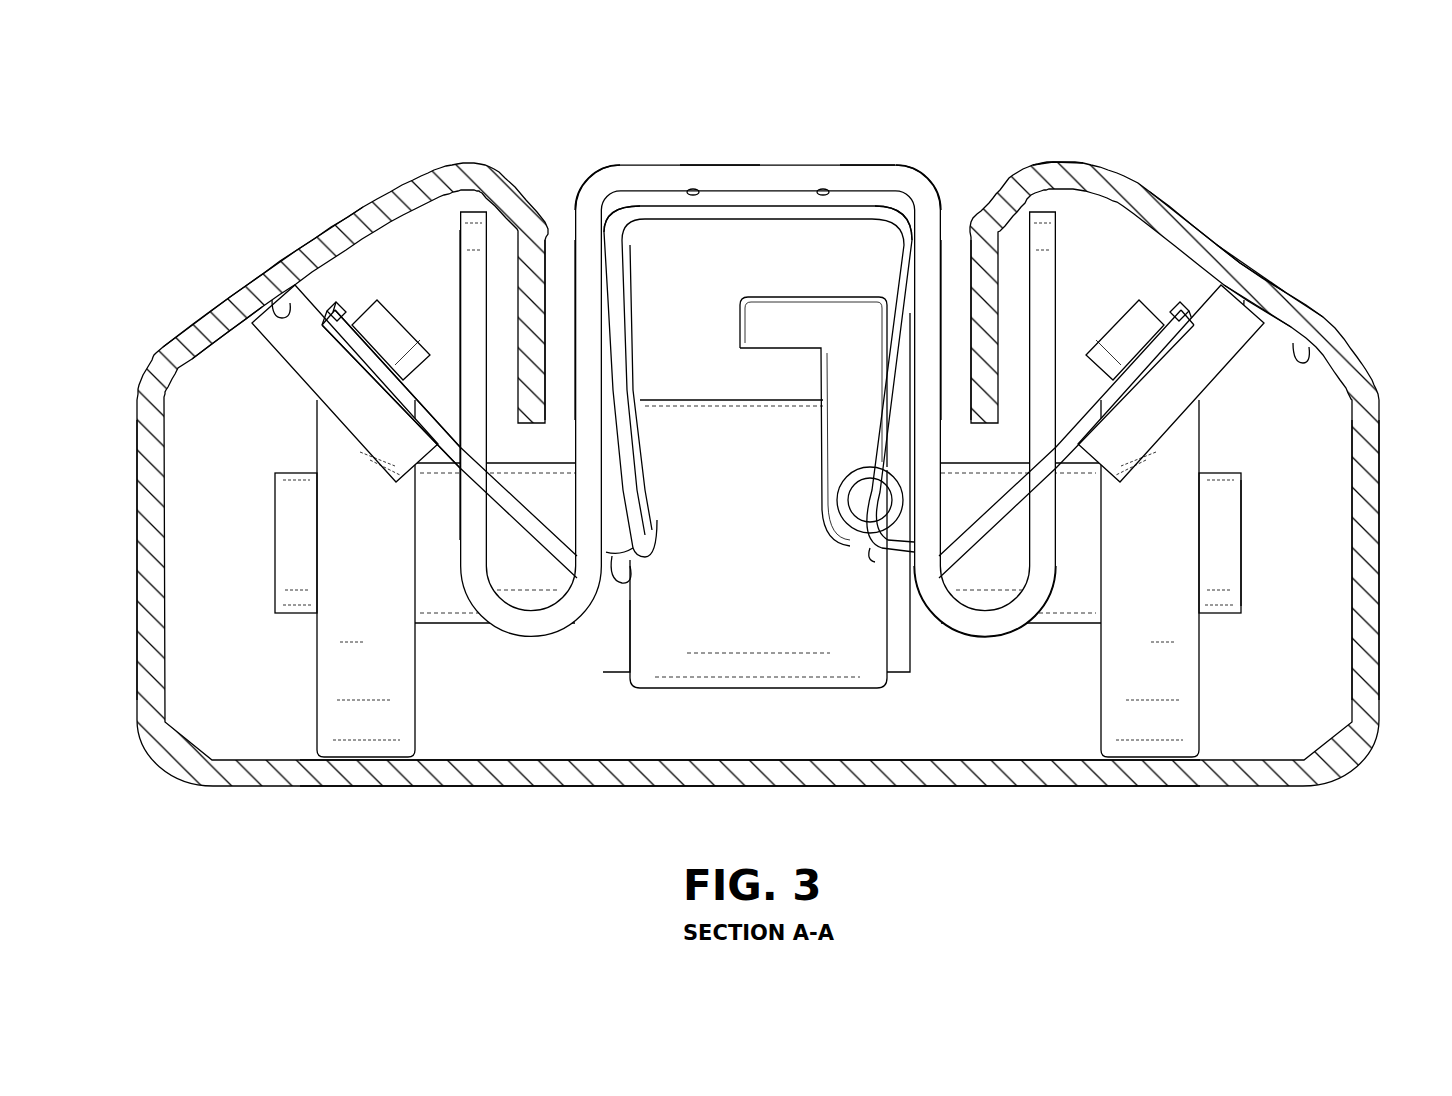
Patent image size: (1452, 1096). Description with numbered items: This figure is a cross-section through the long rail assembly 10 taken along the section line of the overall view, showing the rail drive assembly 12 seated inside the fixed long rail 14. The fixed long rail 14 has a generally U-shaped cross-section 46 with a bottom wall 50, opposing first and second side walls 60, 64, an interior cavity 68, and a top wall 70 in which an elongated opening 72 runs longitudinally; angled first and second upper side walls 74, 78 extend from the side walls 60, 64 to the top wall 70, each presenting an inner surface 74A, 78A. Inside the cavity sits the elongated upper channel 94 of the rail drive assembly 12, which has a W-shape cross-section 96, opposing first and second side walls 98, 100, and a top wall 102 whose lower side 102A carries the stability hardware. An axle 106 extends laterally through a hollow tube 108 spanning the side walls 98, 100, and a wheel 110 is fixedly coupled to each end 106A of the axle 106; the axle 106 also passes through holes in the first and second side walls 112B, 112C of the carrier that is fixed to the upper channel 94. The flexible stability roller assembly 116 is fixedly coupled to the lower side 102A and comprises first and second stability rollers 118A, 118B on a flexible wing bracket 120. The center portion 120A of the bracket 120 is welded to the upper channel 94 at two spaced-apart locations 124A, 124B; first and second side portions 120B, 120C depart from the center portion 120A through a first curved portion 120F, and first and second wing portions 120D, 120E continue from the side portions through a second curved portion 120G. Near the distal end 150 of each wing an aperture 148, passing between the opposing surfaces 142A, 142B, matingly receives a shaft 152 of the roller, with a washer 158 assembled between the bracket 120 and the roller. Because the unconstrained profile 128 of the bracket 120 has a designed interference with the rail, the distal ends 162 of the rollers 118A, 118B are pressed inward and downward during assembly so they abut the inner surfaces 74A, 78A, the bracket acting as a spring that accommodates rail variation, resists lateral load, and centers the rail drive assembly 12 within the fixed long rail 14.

The latch assembly 10 is at (1307, 215).
The rail drive assembly 12 is at (702, 92).
The fixed long rail 14 is at (1351, 776).
The U-shaped cross-section 46 is at (1363, 667).
The bottom wall 50 is at (875, 777).
The first side wall 60 is at (150, 598).
The second side wall 64 is at (1366, 598).
The interior cavity 68 is at (544, 727).
The top wall 70 is at (1057, 172).
The elongated opening 72 is at (931, 150).
The first upper side wall 74 is at (190, 338).
The inner surface 74A is at (173, 353).
The second upper side wall 78 is at (1297, 323).
The inner surface 78A is at (1297, 357).
The upper channel 94 is at (582, 175).
The W-shape cross-section 96 is at (985, 627).
The first side wall 98 is at (587, 267).
The second side wall 100 is at (935, 272).
The top wall 102 is at (657, 173).
The lower side 102A is at (867, 187).
The axle 106 is at (1246, 553).
The end 106A is at (1240, 583).
The hollow tube 108 is at (1060, 632).
The wheel 110 is at (313, 718).
The first side wall 112B is at (615, 663).
The second side wall 112C is at (898, 660).
The flexible stability roller assembly 116 is at (657, 562).
The first stability roller 118A is at (1210, 353).
The second stability roller 118B is at (300, 340).
The flexible wing bracket 120 is at (436, 456).
The center portion 120A is at (772, 177).
The first side portion 120B is at (627, 360).
The second side portion 120C is at (873, 430).
The first wing portion 120D is at (405, 427).
The second wing portion 120E is at (987, 527).
The first curved portion 120F is at (606, 204).
The second curved portion 120G is at (622, 575).
The weld location 124A is at (823, 188).
The weld location 124B is at (693, 188).
The unconstrained profile 128 is at (391, 396).
The first surface 142A is at (450, 387).
The second surface 142B is at (530, 537).
The aperture 148 is at (333, 312).
The distal end 150 is at (320, 305).
The shaft 152 is at (367, 317).
The washer 158 is at (323, 308).
The distal end 162 is at (287, 298).